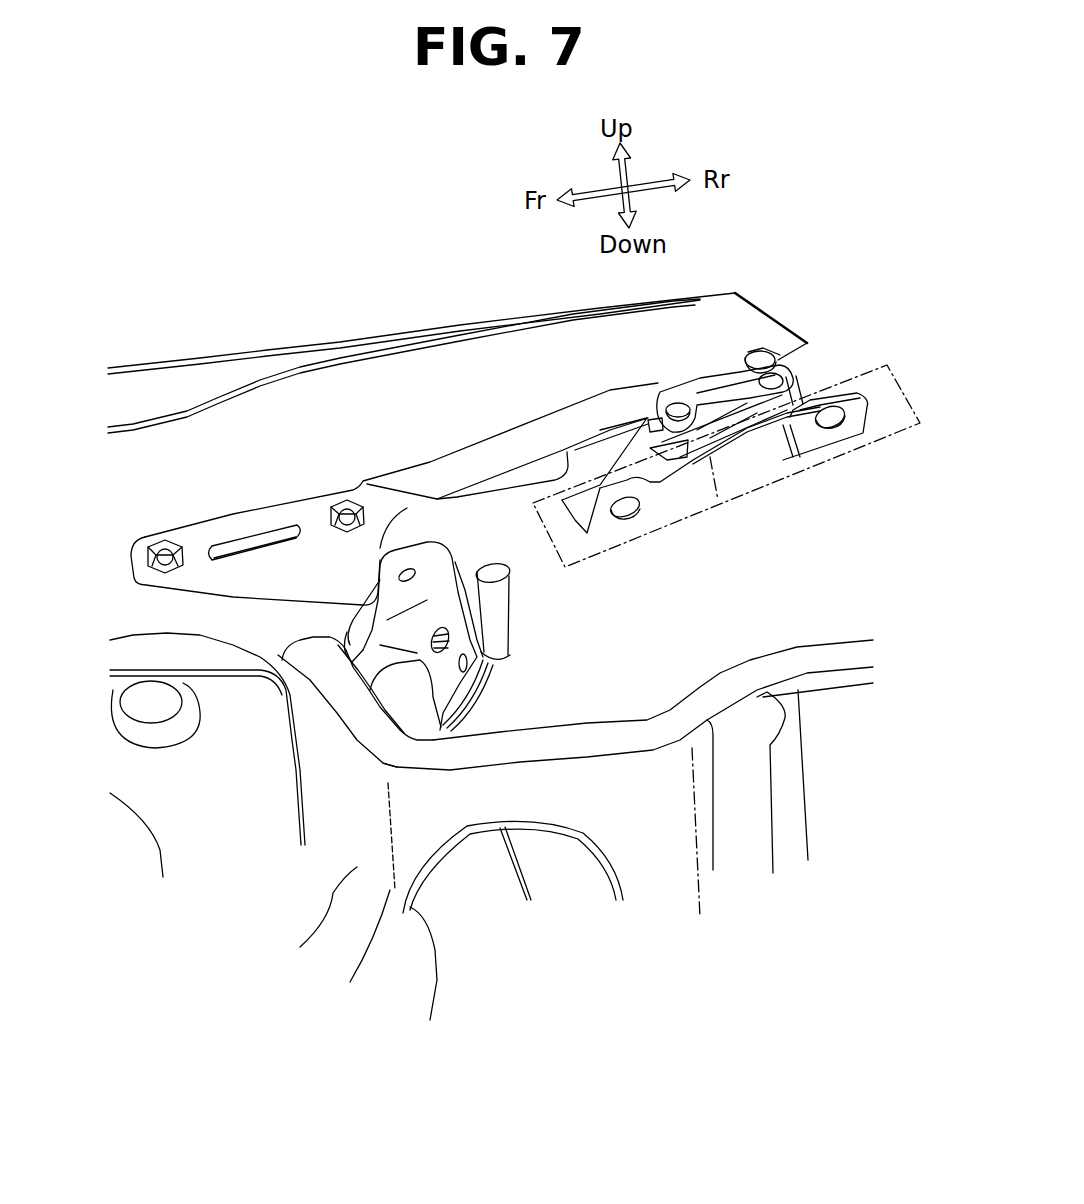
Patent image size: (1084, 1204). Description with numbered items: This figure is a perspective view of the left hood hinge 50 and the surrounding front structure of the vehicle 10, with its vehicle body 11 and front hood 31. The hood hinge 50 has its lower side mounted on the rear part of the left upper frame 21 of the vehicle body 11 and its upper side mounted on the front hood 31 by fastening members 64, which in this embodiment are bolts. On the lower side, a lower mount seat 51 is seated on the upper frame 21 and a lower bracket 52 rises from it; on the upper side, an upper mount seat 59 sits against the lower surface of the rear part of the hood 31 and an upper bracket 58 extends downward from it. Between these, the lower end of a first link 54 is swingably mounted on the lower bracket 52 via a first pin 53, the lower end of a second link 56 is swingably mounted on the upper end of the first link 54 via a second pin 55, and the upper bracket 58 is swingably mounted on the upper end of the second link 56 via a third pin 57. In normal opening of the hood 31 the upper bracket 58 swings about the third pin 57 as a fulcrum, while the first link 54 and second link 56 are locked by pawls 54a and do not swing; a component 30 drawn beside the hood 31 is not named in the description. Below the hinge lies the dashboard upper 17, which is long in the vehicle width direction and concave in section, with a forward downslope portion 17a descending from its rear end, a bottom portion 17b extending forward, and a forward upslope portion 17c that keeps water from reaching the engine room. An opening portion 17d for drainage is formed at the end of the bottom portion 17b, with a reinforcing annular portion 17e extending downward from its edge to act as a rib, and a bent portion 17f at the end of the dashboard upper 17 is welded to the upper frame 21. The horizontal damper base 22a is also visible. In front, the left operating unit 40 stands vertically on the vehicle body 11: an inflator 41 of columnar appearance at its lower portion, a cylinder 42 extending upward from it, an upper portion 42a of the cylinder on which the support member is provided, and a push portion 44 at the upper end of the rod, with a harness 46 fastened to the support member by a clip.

The vehicle 10 is at (198, 195).
The vehicle body 11 is at (125, 630).
The dashboard upper 17 is at (847, 640).
The forward downslope portion 17a is at (712, 812).
The bottom portion 17b is at (651, 851).
The forward upslope portion 17c is at (312, 918).
The opening portion 17d is at (428, 978).
The reinforcing annular portion 17e is at (354, 949).
The bent portion 17f is at (803, 640).
The upper frame 21 is at (907, 393).
The damper base 22a is at (162, 633).
The cover member 30 is at (490, 313).
The front hood 31 is at (373, 335).
The operating unit 40 is at (523, 872).
The inflator 41 is at (530, 895).
The cylinder 42 is at (357, 740).
The upper portion 42a is at (340, 668).
The push portion 44 is at (353, 577).
The harness 46 is at (517, 603).
The hood hinge 50 is at (711, 505).
The lower mount seat 51 is at (753, 460).
The lower bracket 52 is at (813, 388).
The first pin 53 is at (800, 383).
The first link 54 is at (720, 387).
The pawl 54a is at (640, 428).
The second pin 55 is at (672, 402).
The second link 56 is at (783, 463).
The third pin 57 is at (752, 353).
The upper bracket 58 is at (547, 433).
The upper mount seat 59 is at (283, 563).
The fastening member 64 is at (162, 543).